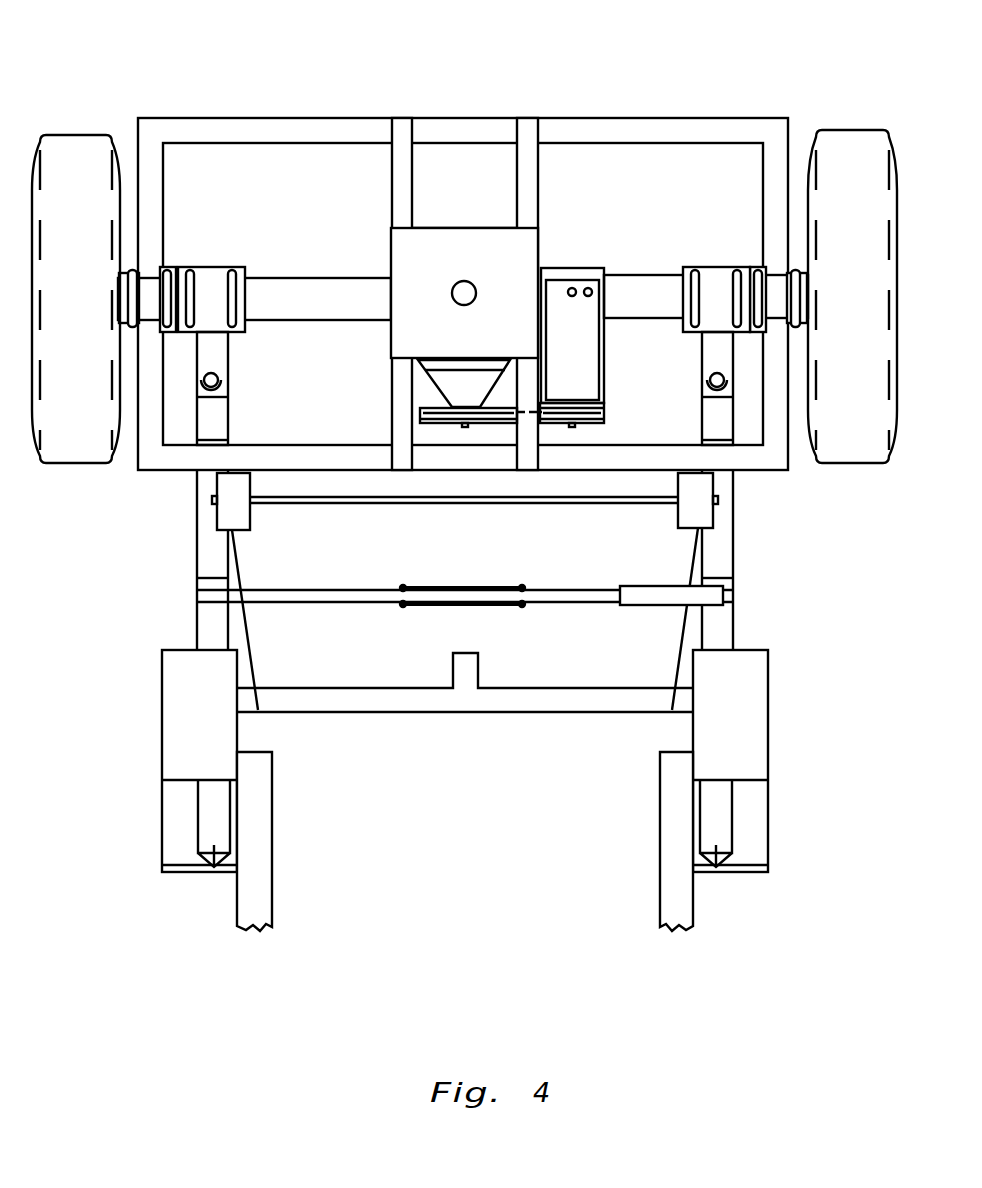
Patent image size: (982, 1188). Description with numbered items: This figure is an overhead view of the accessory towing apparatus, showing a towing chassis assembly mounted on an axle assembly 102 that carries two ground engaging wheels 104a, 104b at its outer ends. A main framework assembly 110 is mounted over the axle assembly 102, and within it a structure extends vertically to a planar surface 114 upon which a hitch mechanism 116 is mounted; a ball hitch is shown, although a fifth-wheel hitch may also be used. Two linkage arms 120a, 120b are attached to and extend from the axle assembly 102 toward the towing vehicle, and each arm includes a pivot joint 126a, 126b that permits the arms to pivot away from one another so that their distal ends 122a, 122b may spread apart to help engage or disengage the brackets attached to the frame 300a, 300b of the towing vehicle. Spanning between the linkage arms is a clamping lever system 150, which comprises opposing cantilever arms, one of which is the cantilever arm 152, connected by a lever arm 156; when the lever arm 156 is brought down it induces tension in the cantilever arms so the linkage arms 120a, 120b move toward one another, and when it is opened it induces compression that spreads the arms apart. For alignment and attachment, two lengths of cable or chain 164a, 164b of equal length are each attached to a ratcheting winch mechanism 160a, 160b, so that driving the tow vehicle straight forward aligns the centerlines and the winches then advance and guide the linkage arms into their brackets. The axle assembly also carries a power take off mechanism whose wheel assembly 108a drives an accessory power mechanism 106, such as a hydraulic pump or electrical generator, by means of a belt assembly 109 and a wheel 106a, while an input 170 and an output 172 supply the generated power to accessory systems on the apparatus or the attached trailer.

The axle assembly 102 is at (302, 278).
The wheel 104a is at (848, 130).
The wheel 104b is at (74, 135).
The accessory power mechanism 106 is at (604, 347).
The wheel 106a is at (572, 427).
The wheel assembly 108a is at (465, 427).
The belt assembly 109 is at (530, 415).
The main framework assembly 110 is at (630, 118).
The planar surface 114 is at (465, 228).
The hitch mechanism 116 is at (452, 296).
The linkage arm 120a is at (735, 560).
The linkage arm 120b is at (196, 566).
The distal end 122a is at (715, 850).
The distal end 122b is at (216, 868).
The pivot joint 126a is at (710, 381).
The pivot joint 126b is at (218, 381).
The clamping lever system 150 is at (422, 607).
The cantilever arm 152 is at (323, 604).
The lever arm 156 is at (653, 606).
The ratcheting winch mechanism 160a is at (715, 520).
The ratcheting winch mechanism 160b is at (215, 520).
The cable or chain 164a is at (690, 565).
The cable or chain 164b is at (236, 562).
The input 170 is at (572, 288).
The output 172 is at (596, 291).
The frame 300a is at (660, 837).
The frame 300b is at (272, 837).